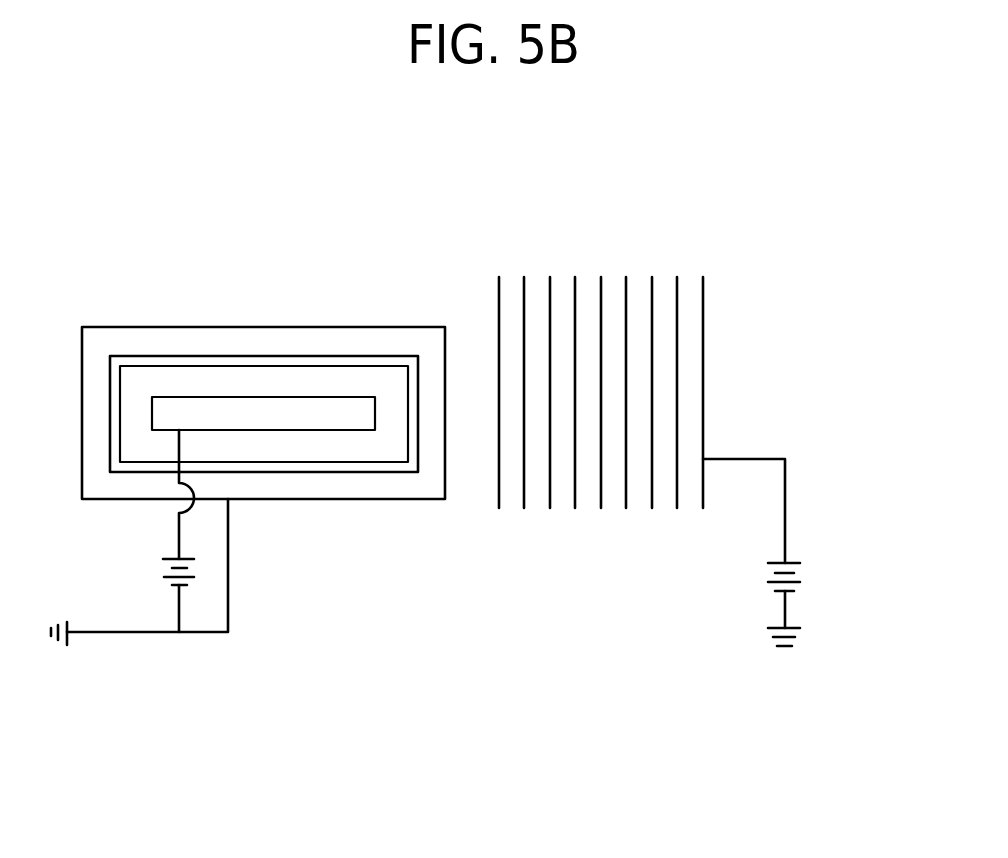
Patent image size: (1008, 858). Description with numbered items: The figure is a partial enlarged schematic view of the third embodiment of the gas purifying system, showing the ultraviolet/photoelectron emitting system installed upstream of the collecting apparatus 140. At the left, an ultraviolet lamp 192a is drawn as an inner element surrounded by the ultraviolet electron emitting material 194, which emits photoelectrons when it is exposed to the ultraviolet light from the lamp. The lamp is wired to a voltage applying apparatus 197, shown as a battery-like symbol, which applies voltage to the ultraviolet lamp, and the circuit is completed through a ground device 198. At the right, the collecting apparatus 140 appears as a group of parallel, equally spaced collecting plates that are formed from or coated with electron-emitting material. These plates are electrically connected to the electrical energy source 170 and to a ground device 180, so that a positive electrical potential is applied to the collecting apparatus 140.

The collecting apparatus 140 is at (587, 252).
The electrical energy source 170 is at (802, 573).
The ground device 180 is at (802, 640).
The ultraviolet lamp 192a is at (187, 397).
The ultraviolet electron emitting material 194 is at (340, 357).
The voltage applying apparatus 197 is at (163, 568).
The ground device 198 is at (65, 648).